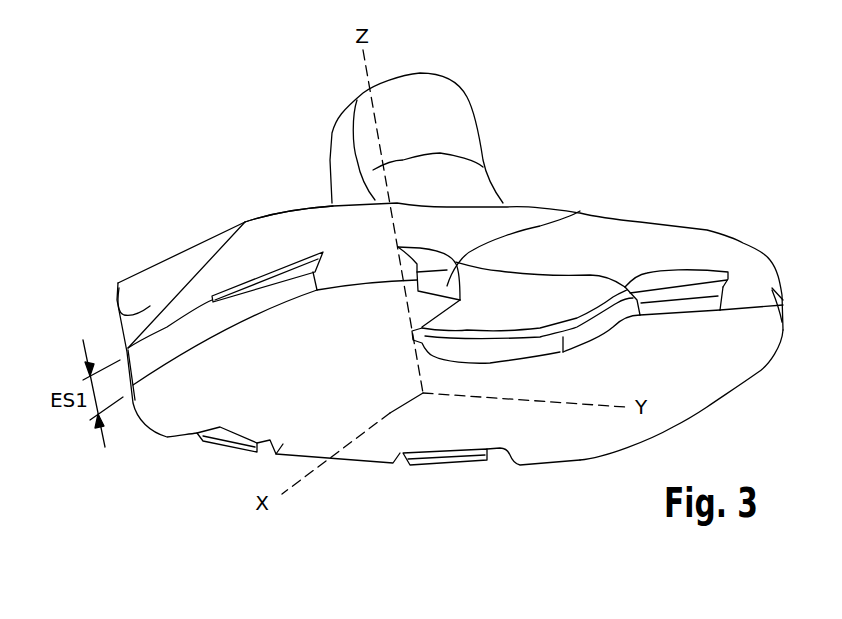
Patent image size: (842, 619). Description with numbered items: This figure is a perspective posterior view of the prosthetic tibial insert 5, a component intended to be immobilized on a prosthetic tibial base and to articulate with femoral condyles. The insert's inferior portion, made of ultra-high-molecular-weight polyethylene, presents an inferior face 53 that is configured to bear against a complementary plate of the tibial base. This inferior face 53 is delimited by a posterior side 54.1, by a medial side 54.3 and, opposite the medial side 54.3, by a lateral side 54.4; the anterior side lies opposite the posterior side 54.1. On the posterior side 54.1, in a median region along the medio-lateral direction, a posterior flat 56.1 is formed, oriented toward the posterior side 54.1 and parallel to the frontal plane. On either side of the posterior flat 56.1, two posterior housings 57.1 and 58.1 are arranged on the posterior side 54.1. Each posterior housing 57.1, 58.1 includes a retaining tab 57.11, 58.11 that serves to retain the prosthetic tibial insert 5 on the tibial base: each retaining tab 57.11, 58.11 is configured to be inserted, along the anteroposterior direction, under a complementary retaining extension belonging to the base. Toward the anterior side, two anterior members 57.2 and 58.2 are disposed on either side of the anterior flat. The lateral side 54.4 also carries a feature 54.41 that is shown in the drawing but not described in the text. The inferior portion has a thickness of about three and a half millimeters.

The prosthetic tibial insert 5 is at (680, 117).
The inferior face 53 is at (700, 367).
The posterior side 54.1 is at (277, 235).
The medial side 54.3 is at (760, 373).
The lateral side 54.4 is at (203, 268).
The raised rib on chamfer face 54.41 is at (275, 275).
The posterior flat 56.1 is at (462, 353).
The posterior housing 57.1 is at (683, 280).
The retaining tab 57.11 is at (663, 300).
The anterior member 57.2 is at (453, 460).
The posterior housing 58.1 is at (430, 263).
The retaining tab 58.11 is at (487, 263).
The anterior member 58.2 is at (227, 443).